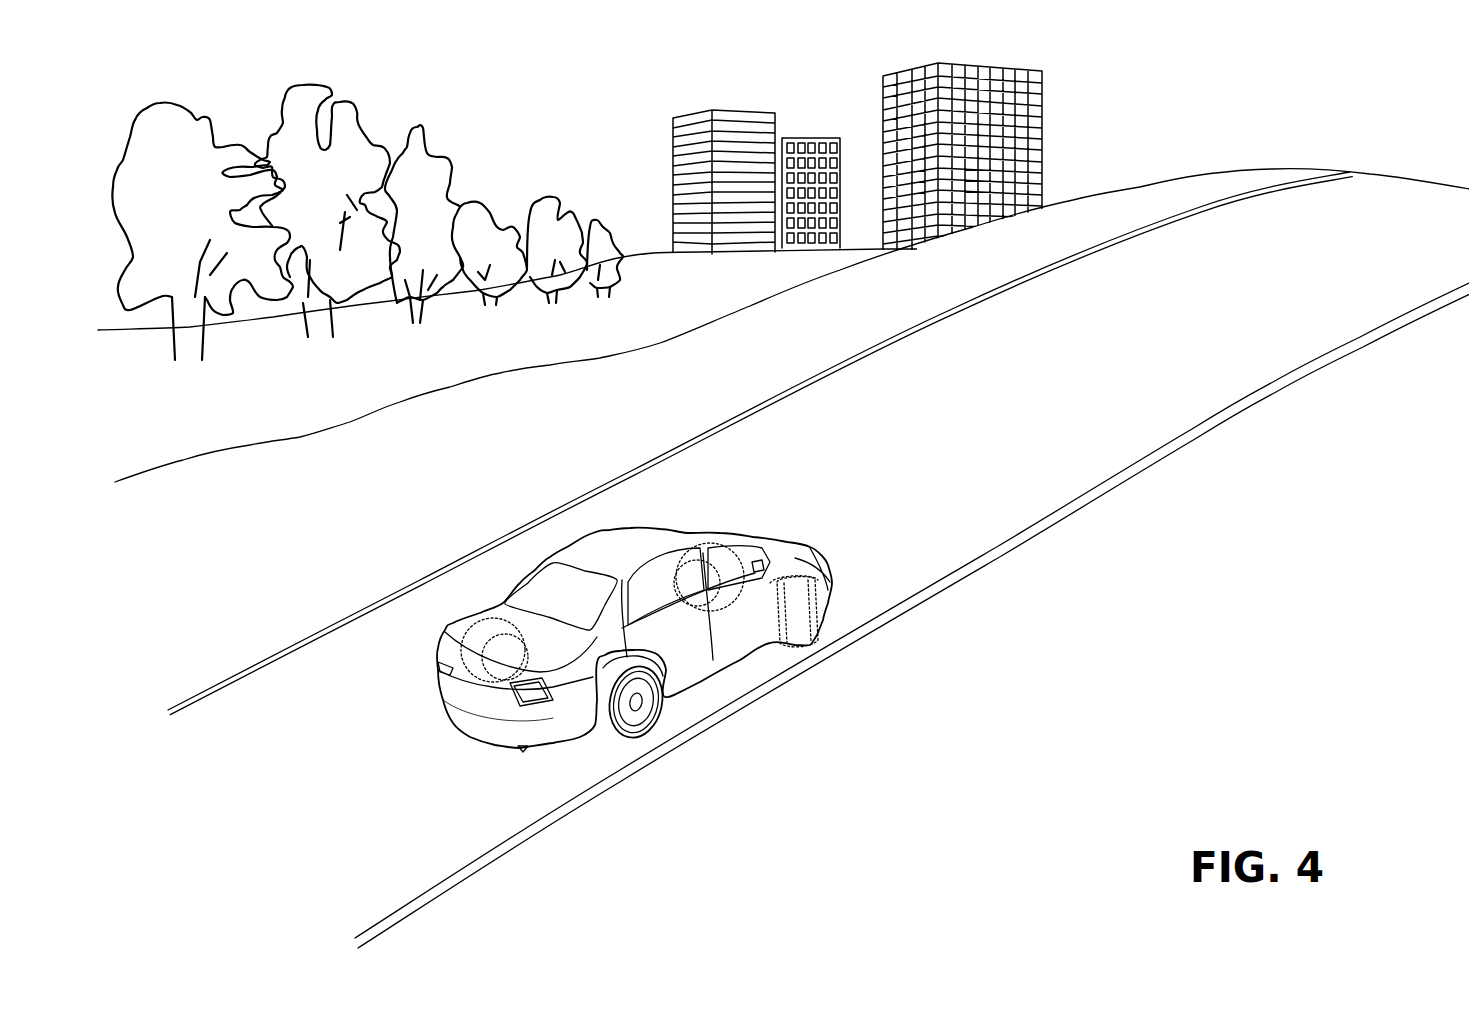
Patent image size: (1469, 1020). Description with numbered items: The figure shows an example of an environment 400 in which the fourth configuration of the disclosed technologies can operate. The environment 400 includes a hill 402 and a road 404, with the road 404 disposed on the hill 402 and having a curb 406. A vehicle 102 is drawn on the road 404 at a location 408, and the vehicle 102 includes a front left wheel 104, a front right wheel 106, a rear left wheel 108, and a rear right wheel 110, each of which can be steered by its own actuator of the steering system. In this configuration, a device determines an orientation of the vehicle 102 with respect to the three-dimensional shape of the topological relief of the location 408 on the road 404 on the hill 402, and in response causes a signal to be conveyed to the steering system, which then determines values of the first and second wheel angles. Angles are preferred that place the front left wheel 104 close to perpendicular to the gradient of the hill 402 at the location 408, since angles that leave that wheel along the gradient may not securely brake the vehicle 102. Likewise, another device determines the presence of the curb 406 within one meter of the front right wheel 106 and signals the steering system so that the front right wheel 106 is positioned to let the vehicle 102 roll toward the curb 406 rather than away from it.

The vehicle 102 is at (425, 696).
The front left wheel 104 is at (687, 540).
The front right wheel 106 is at (813, 627).
The rear left wheel 108 is at (469, 626).
The rear right wheel 110 is at (638, 725).
The environment 400 is at (1218, 641).
The hill 402 is at (1172, 195).
The road 404 is at (1305, 205).
The curb 406 is at (1156, 460).
The location 408 is at (794, 707).